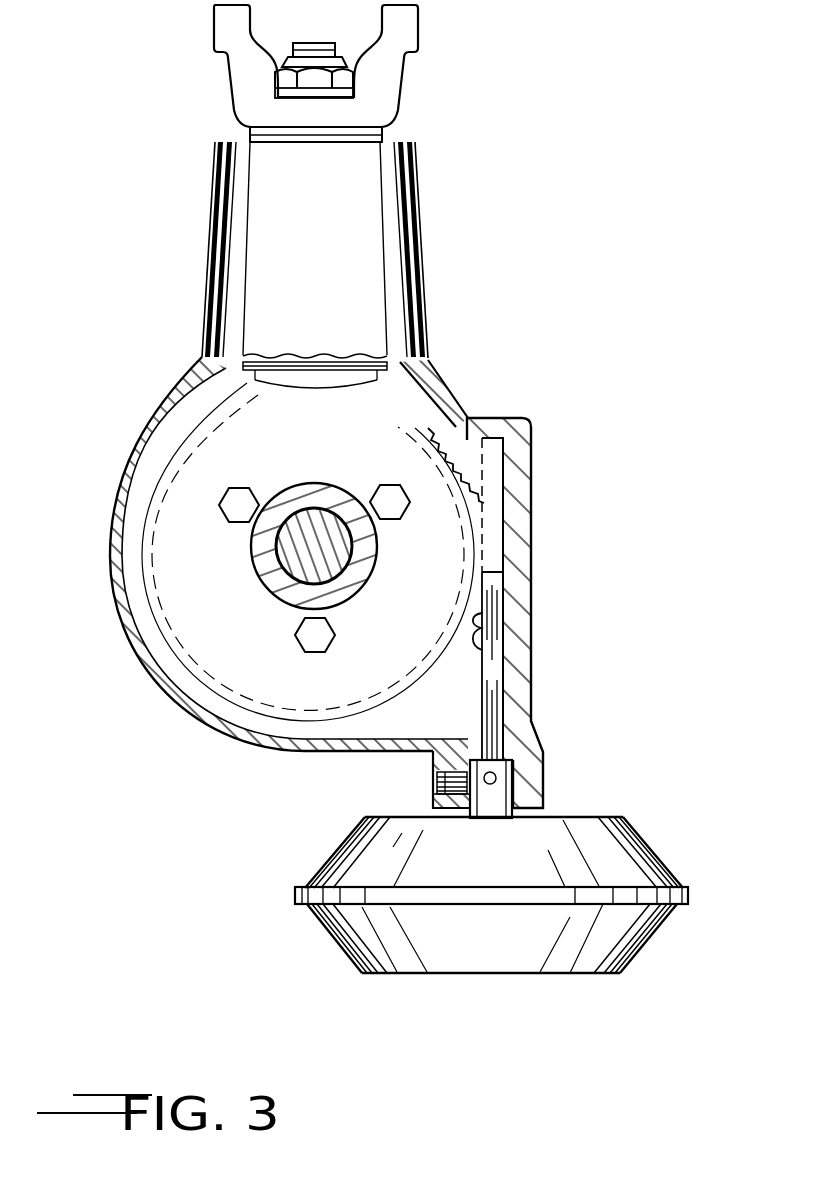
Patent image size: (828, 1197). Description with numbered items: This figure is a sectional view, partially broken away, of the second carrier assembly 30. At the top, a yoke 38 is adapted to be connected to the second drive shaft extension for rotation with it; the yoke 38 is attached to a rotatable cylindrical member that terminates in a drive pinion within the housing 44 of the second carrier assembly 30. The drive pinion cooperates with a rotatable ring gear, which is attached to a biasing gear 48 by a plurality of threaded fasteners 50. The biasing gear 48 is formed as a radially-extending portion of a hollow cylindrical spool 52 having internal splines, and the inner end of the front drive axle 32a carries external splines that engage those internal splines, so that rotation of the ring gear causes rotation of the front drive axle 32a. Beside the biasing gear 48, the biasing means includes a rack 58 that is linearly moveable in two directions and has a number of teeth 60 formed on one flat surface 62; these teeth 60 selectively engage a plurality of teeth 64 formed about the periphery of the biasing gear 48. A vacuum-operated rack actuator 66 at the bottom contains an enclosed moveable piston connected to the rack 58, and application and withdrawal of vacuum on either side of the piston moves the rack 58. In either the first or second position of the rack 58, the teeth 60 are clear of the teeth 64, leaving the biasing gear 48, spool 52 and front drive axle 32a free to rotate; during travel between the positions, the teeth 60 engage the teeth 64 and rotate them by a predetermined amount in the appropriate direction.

The second carrier assembly 30 is at (476, 334).
The front drive axle 32a is at (303, 563).
The yoke 38 is at (405, 97).
The housing 44 is at (420, 210).
The biasing gear 48 is at (138, 588).
The threaded fasteners 50 is at (232, 497).
The hollow cylindrical spool 52 is at (298, 500).
The rack 58 is at (478, 634).
The teeth 60 is at (482, 646).
The flat surface 62 is at (473, 705).
The teeth 64 is at (465, 437).
The vacuum-operated rack actuator 66 is at (630, 846).